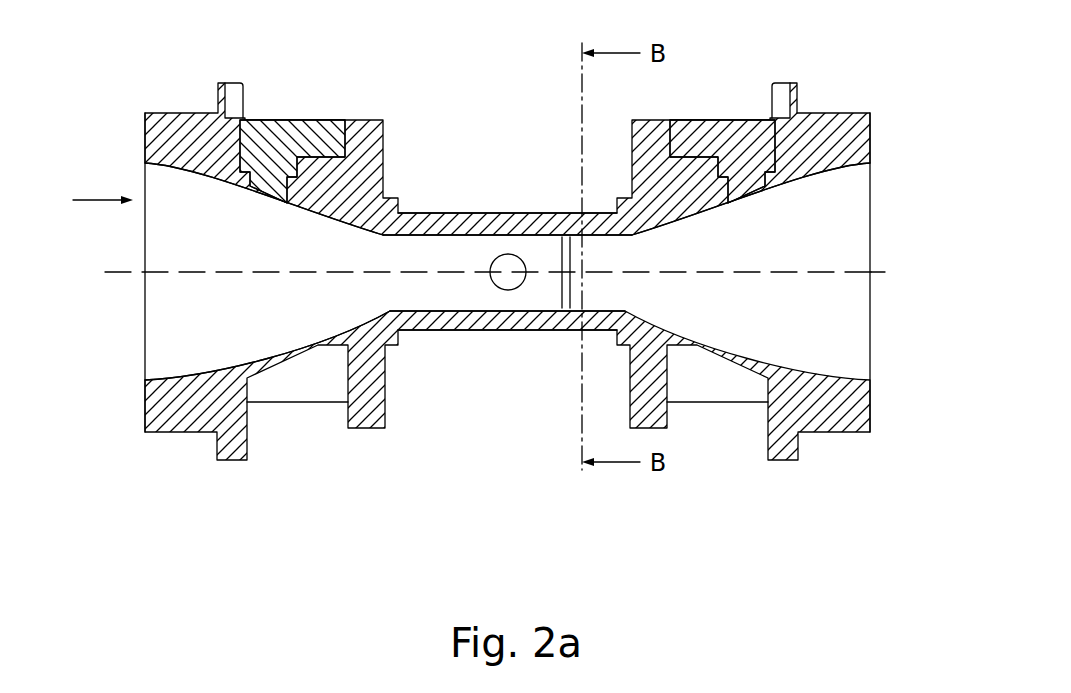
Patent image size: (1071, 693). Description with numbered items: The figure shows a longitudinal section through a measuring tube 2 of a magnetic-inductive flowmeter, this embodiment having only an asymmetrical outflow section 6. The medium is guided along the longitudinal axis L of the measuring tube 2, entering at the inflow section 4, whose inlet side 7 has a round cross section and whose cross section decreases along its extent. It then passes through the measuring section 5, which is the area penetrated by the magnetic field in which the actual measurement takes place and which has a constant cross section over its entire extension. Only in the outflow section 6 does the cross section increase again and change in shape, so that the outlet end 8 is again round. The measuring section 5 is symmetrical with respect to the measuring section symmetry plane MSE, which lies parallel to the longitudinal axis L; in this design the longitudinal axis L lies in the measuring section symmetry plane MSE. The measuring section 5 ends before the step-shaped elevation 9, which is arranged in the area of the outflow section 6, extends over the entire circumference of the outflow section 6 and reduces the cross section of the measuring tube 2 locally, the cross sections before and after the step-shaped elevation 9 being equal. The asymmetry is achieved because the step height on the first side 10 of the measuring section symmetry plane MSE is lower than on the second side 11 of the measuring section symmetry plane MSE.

The measuring tube 2 is at (501, 257).
The inflow section 4 is at (208, 200).
The measuring section 5 is at (475, 253).
The outflow section 6 is at (815, 192).
The inlet side 7 is at (126, 371).
The outlet end 8 is at (897, 196).
The step-shaped elevation 9 is at (563, 297).
The first side 10 is at (536, 237).
The second side 11 is at (472, 309).
The longitudinal axis L is at (112, 272).
The measuring section symmetry plane MSE is at (885, 272).